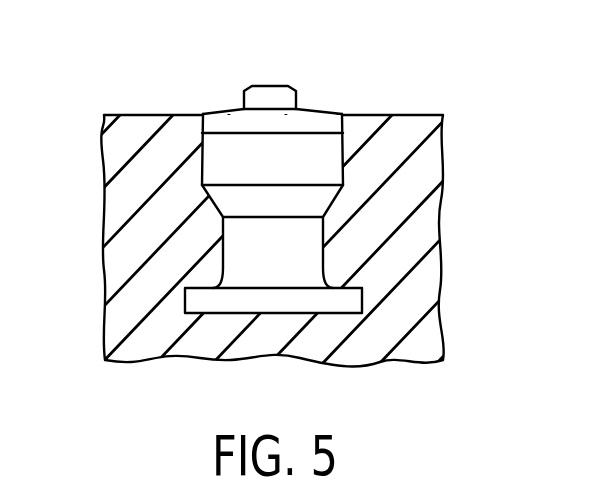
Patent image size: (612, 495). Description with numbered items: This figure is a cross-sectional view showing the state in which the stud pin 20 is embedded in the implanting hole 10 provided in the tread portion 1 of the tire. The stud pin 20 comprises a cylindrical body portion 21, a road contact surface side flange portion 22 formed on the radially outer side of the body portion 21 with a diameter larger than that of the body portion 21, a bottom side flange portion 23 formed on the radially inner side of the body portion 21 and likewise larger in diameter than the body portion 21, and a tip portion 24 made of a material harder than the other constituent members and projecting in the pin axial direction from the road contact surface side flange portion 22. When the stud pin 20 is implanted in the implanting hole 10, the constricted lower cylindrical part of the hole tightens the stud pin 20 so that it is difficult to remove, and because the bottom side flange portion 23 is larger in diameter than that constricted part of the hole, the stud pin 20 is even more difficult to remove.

The tread portion 1 is at (418, 115).
The implanting hole 10 is at (268, 175).
The stud pin 20 is at (235, 109).
The cylindrical body portion 21 is at (306, 243).
The road contact surface side flange portion 22 is at (326, 152).
The bottom side flange portion 23 is at (350, 297).
The tip portion 24 is at (280, 98).